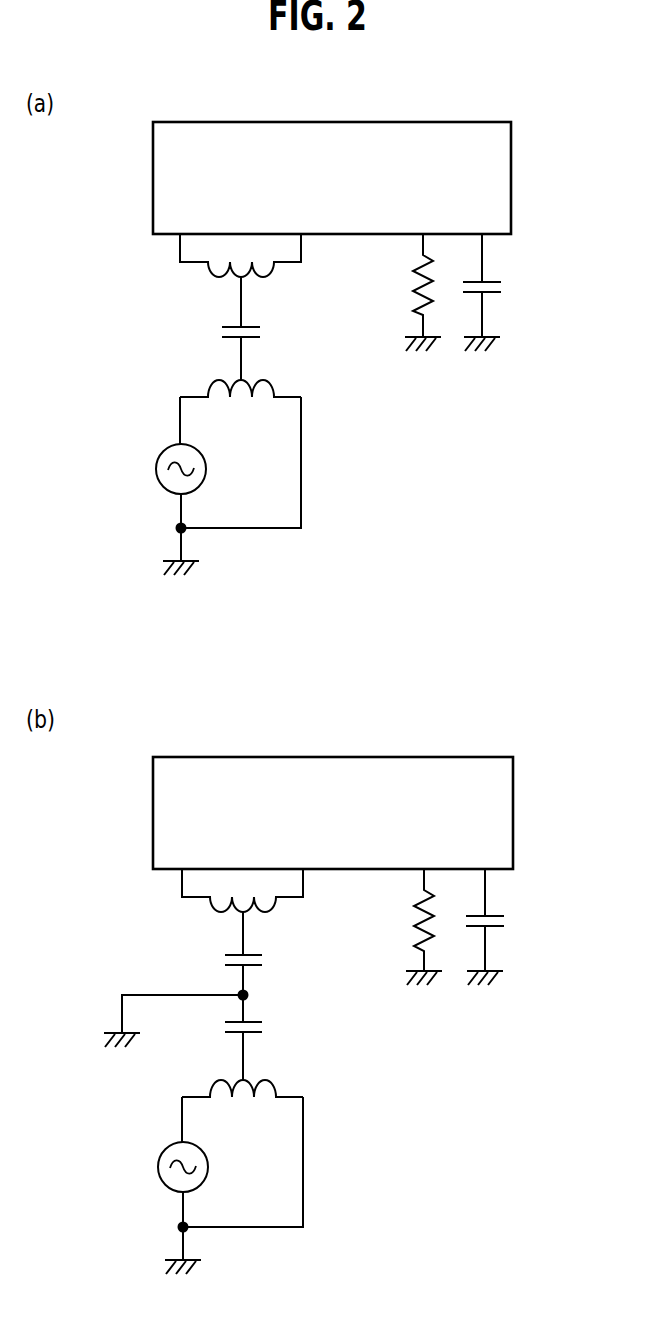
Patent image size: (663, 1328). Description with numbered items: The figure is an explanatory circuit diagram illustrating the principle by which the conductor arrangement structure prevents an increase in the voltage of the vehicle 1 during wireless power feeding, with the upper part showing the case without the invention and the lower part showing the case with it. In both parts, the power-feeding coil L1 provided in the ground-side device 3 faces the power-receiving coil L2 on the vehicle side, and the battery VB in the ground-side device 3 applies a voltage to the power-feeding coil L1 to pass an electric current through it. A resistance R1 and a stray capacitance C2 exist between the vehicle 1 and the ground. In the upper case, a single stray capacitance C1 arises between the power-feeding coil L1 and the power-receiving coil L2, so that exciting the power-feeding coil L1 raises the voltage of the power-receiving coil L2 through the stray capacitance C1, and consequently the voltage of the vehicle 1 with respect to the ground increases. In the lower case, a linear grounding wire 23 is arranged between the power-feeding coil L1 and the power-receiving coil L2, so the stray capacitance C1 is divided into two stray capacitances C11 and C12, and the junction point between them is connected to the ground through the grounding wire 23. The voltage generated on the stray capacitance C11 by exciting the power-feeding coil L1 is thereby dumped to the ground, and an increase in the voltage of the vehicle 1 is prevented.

The vehicle 1 is at (400, 122).
The ground-side device 3 is at (236, 818).
The linear grounding wire 23 is at (184, 995).
The power-feeding coil L1 is at (243, 729).
The power-receiving coil L2 is at (243, 584).
The stray capacitance C1 is at (225, 328).
The stray capacitance C2 is at (502, 609).
The stray capacitance C11 is at (268, 953).
The stray capacitance C12 is at (268, 1037).
The resistance R1 is at (409, 609).
The battery VB is at (170, 445).